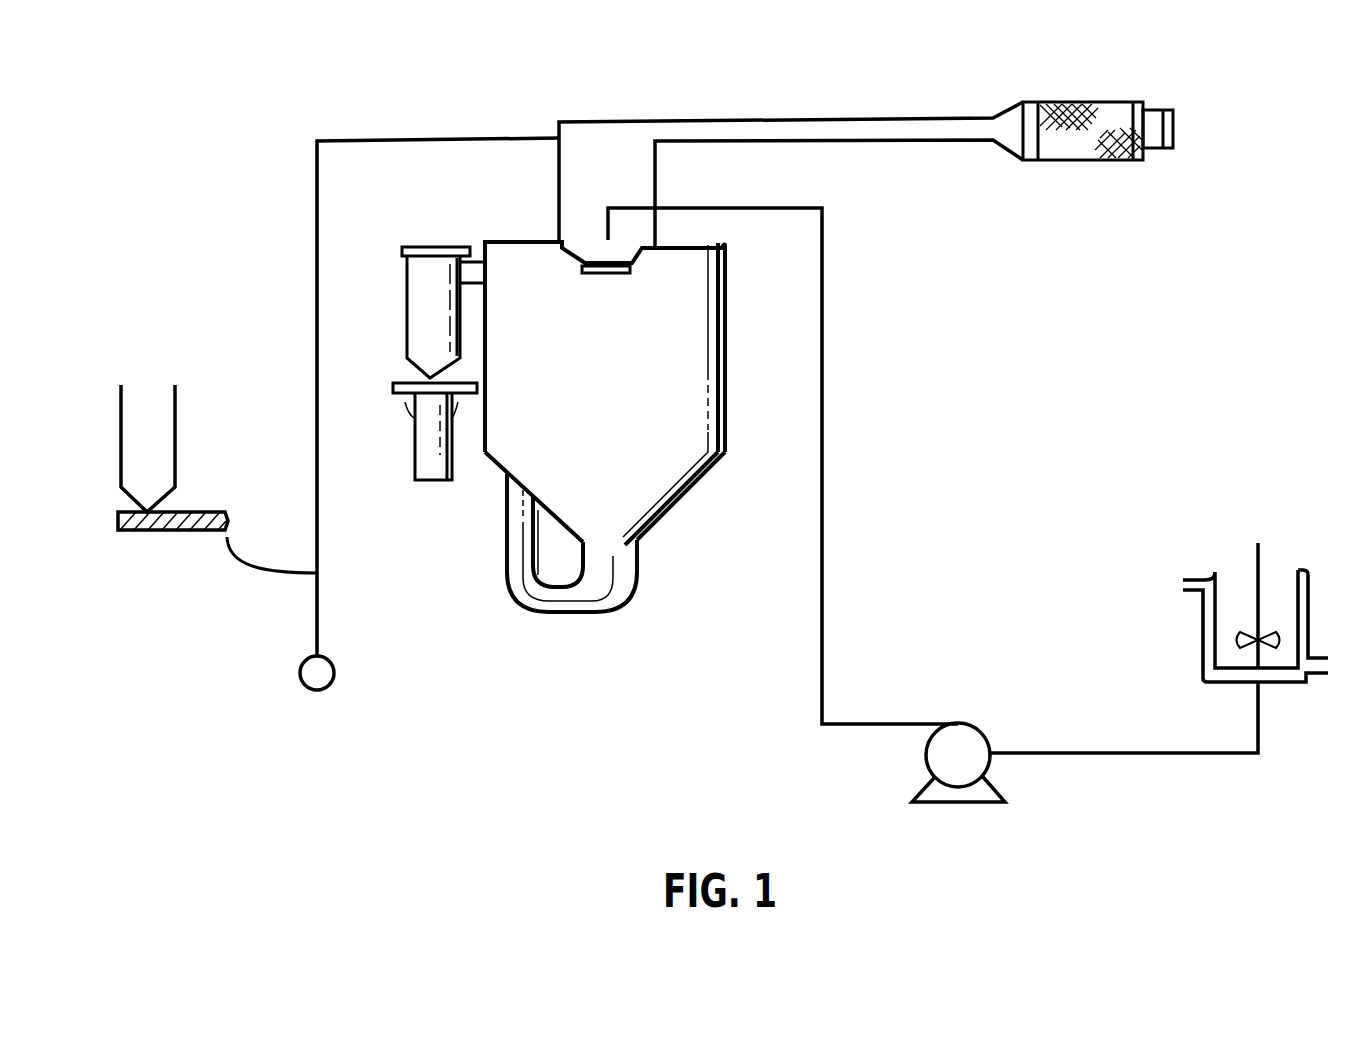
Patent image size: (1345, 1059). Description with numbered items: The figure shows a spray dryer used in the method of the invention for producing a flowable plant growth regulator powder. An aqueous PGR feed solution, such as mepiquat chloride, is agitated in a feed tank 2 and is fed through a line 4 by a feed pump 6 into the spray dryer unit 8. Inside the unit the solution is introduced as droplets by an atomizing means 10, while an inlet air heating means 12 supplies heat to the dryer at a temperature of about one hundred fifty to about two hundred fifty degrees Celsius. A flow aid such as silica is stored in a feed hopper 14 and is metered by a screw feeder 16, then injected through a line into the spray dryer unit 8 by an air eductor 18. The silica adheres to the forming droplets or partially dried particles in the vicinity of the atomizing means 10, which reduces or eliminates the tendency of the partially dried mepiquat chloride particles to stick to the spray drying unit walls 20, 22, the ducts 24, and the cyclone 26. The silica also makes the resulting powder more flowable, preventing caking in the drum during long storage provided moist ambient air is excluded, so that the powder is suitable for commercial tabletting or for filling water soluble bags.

The feed tank 2 is at (1247, 538).
The line 4 is at (1100, 753).
The feed pump 6 is at (985, 805).
The spray dryer unit 8 is at (727, 353).
The atomizing means 10 is at (672, 232).
The inlet air heating means 12 is at (1132, 100).
The feed hopper 14 is at (170, 378).
The screw feeder 16 is at (187, 497).
The air eductor 18 is at (282, 578).
The spray drying unit wall 20 is at (485, 417).
The spray drying unit wall 22 is at (718, 398).
The ducts 24 is at (638, 556).
The cyclone 26 is at (412, 293).